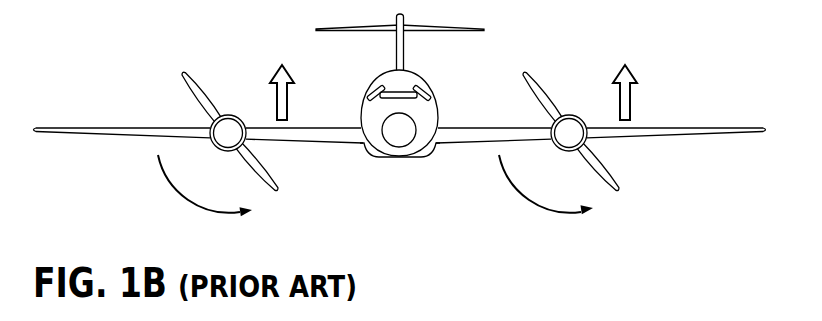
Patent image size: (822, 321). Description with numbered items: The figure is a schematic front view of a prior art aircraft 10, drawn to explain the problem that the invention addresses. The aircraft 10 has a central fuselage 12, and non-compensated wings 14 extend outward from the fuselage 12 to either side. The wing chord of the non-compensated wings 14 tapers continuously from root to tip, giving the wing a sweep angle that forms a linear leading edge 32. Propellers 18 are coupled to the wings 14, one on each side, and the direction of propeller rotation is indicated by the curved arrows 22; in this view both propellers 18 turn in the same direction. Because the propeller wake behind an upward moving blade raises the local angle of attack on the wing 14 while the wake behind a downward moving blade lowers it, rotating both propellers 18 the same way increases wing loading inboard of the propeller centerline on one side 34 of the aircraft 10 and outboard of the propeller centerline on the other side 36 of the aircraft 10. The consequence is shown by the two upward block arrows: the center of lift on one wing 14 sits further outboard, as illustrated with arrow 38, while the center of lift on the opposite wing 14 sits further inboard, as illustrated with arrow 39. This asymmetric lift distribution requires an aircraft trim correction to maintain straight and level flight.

The aircraft 10 is at (400, 103).
The fuselage 12 is at (438, 113).
The non-compensated wings 14 is at (400, 114).
The propellers 18 is at (209, 148).
The arrows indicating direction of propeller rotation 22 is at (197, 208).
The linear leading edge 32 is at (642, 134).
The one side of the aircraft 34 is at (332, 128).
The other side of the aircraft 36 is at (506, 128).
The arrow illustrating center of lift further outboard 38 is at (613, 76).
The arrow illustrating center of lift further inboard 39 is at (271, 78).